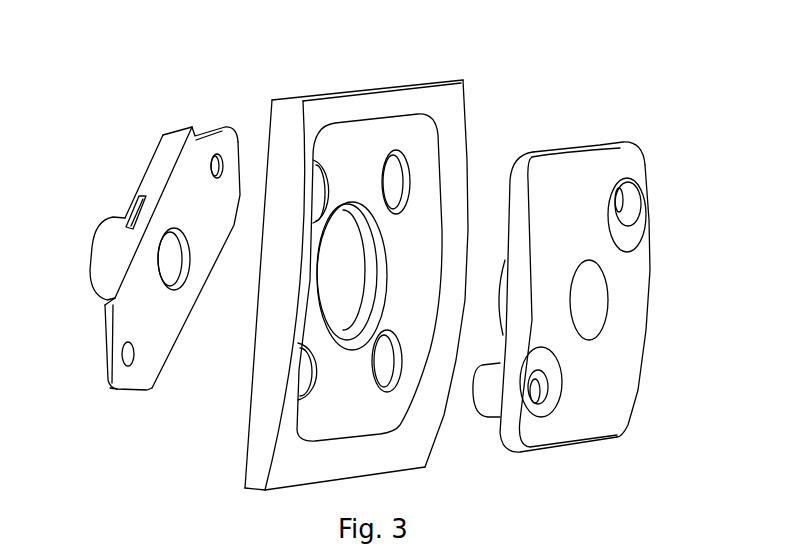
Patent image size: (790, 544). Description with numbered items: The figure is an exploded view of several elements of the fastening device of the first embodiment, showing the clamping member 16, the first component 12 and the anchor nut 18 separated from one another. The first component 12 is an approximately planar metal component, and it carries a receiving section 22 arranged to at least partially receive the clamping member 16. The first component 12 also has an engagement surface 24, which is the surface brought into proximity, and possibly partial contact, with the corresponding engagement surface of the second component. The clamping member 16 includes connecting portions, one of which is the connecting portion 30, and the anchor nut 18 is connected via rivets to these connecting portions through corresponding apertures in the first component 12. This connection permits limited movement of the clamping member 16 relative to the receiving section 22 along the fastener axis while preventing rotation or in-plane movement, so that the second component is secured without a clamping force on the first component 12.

The first component 12 is at (315, 112).
The engagement surface 24 is at (403, 102).
The receiving section 22 is at (423, 165).
The clamping member 16 is at (625, 167).
The anchor nut 18 is at (123, 370).
The connecting portion 30 is at (485, 398).